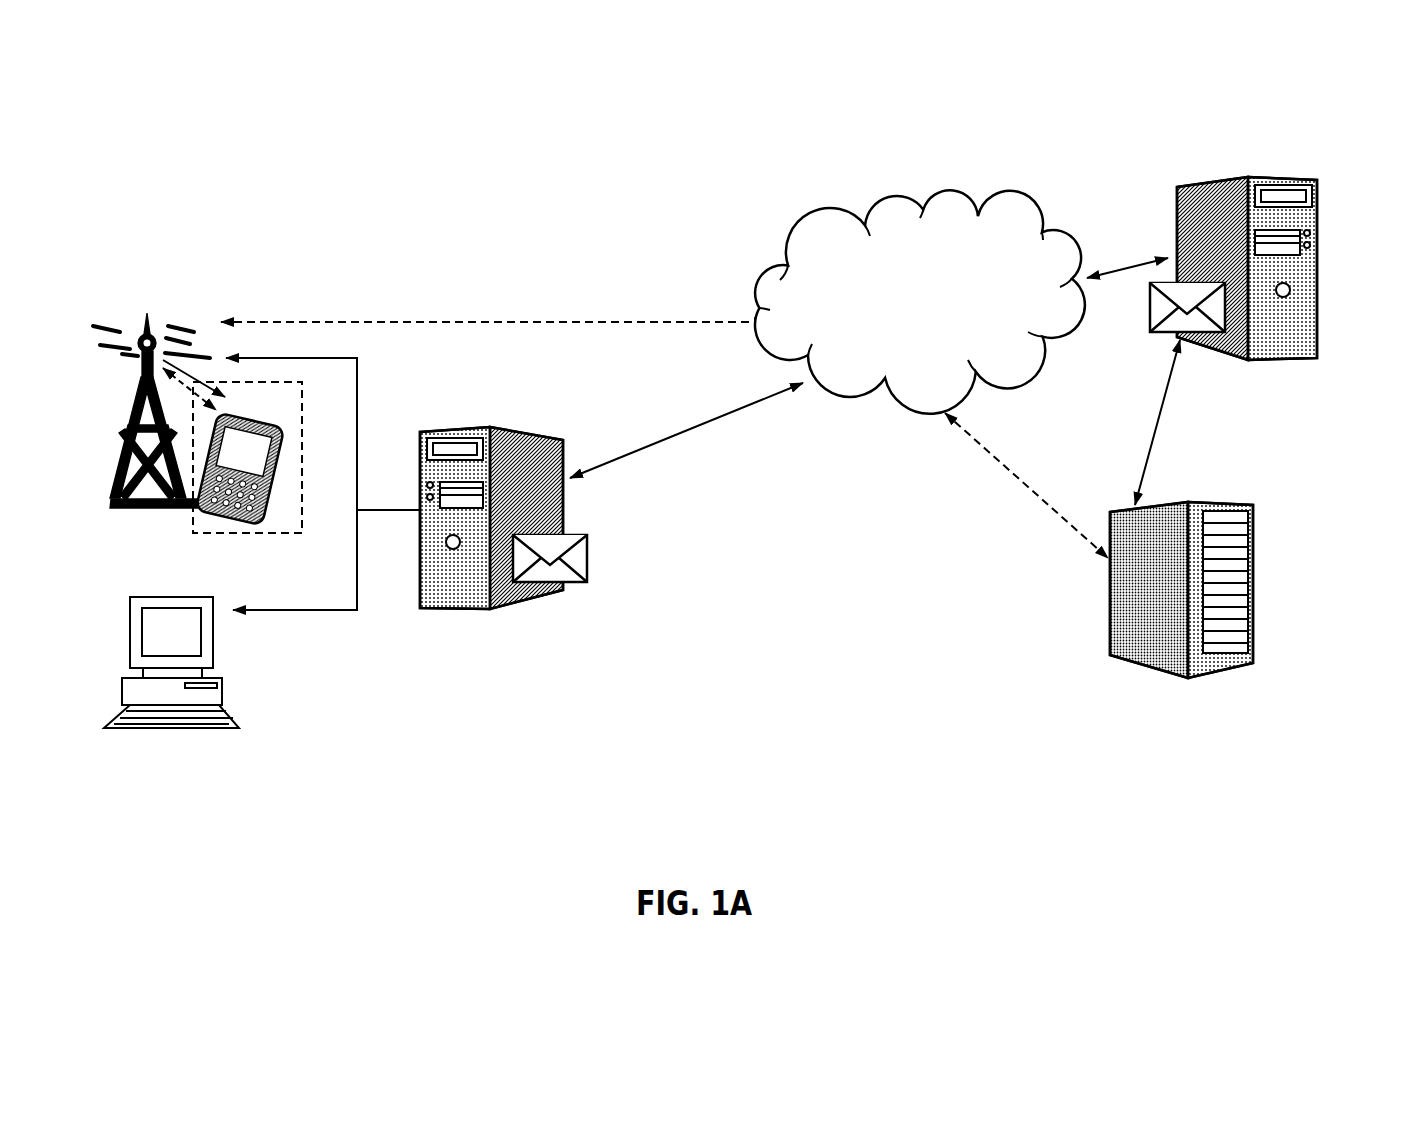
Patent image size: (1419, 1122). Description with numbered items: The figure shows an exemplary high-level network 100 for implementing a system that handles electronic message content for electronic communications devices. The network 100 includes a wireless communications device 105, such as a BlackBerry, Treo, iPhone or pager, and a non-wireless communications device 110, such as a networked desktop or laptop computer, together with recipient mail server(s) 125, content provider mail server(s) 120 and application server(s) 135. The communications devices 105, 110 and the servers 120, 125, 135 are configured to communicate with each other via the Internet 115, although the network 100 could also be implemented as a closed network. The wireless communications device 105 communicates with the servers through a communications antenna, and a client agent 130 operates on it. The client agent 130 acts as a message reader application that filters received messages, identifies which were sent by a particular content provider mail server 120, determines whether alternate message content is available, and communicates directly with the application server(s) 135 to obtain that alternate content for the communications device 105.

The network 100 is at (72, 63).
The communications device 105 is at (107, 400).
The communications device 110 is at (112, 633).
The Internet 115 is at (803, 218).
The content provider mail server(s) 120 is at (1288, 172).
The recipient mail server(s) 125 is at (500, 422).
The client agent 130 is at (302, 443).
The application server(s) 135 is at (1214, 500).